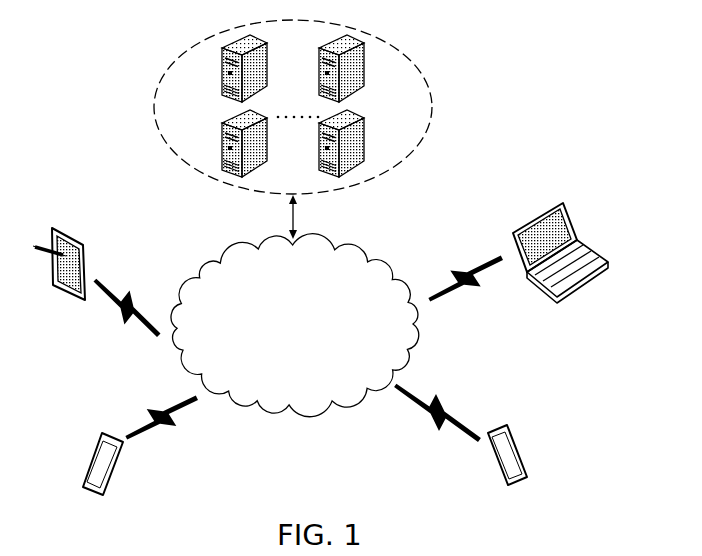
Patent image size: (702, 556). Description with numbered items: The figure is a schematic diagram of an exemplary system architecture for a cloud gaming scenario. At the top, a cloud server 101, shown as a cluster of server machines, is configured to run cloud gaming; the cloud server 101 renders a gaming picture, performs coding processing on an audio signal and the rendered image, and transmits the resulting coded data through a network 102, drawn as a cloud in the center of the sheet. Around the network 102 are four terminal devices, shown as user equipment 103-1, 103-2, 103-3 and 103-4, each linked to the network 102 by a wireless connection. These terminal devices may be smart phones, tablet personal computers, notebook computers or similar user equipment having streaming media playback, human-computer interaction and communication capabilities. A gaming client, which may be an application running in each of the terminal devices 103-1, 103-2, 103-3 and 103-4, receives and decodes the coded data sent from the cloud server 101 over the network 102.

The cloud server 101 is at (433, 94).
The network 102 is at (299, 318).
The user equipment 103-1 is at (533, 290).
The user equipment 103-2 is at (490, 457).
The user equipment 103-3 is at (122, 467).
The user equipment 103-4 is at (108, 223).